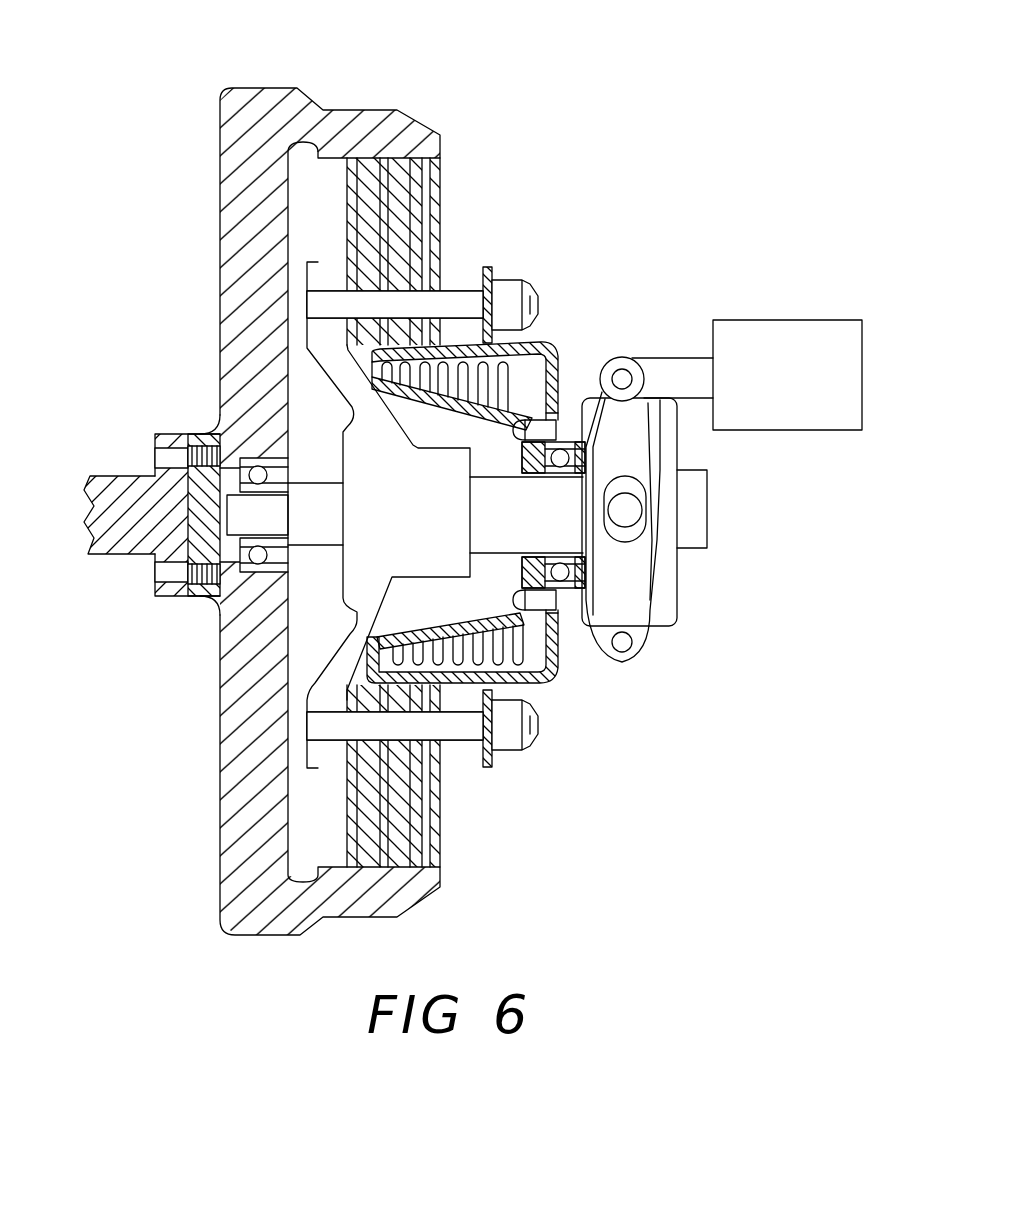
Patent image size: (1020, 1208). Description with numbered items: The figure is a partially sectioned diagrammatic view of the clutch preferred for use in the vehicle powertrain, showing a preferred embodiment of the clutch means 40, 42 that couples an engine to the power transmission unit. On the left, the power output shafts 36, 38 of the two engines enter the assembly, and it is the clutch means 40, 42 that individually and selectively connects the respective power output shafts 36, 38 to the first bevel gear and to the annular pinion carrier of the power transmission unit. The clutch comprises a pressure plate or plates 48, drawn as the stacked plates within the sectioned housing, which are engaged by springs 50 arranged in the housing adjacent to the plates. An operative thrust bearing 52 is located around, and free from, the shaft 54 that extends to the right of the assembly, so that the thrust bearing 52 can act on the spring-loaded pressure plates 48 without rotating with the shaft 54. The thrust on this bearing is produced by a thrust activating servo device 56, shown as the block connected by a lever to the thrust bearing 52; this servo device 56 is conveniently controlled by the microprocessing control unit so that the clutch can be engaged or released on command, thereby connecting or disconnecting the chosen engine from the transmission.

The power output shaft 36 is at (125, 540).
The power output shaft 38 is at (182, 558).
The clutch means 40 is at (458, 80).
The clutch means 42 is at (493, 387).
The pressure plate 48 is at (440, 212).
The springs 50 is at (556, 350).
The thrust bearing 52 is at (572, 590).
The shaft 54 is at (690, 523).
The thrust activating servo device 56 is at (768, 348).